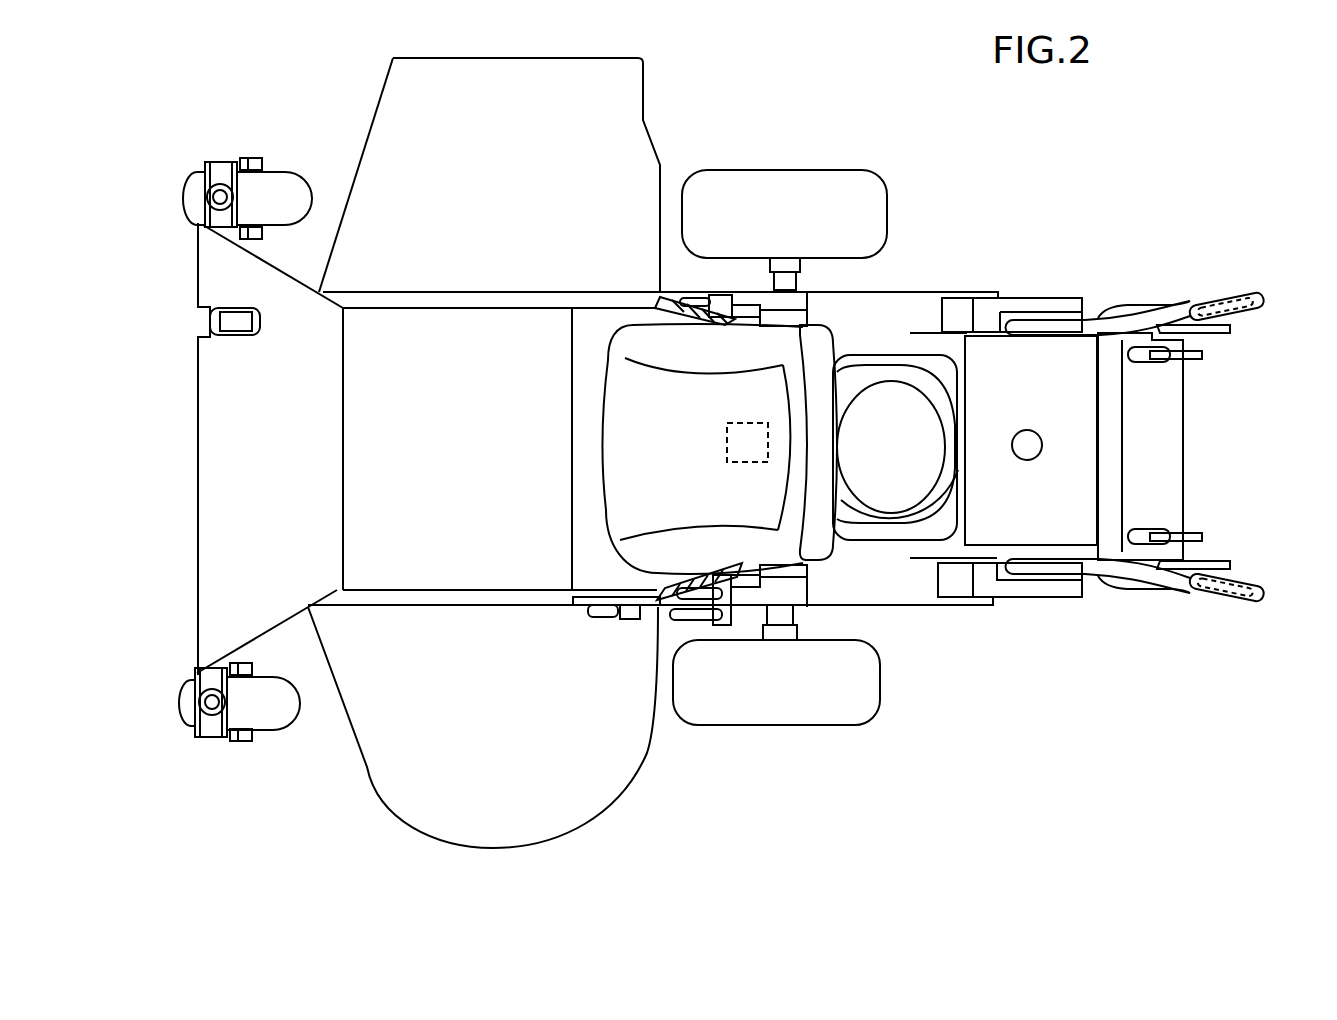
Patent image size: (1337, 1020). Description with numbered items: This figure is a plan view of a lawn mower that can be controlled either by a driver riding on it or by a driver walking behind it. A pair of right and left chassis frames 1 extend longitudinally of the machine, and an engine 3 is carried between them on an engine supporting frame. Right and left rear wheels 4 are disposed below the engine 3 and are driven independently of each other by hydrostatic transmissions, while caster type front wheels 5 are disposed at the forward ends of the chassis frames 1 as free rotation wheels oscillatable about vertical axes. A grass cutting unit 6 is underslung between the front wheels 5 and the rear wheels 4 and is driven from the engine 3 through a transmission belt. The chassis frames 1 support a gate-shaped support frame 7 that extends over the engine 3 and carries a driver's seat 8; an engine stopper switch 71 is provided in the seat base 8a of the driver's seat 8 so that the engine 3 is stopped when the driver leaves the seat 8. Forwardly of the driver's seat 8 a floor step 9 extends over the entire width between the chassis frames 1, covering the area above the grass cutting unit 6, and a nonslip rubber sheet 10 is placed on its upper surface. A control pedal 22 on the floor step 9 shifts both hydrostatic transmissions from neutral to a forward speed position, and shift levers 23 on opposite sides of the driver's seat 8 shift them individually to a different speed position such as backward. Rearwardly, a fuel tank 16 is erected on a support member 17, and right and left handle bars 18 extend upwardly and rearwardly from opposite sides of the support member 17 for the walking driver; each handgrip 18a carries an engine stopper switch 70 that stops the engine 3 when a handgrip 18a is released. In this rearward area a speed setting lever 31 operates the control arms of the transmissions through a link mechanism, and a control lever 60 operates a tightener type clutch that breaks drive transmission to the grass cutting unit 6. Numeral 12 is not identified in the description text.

The chassis frames 1 is at (431, 292).
The engine 3 is at (880, 540).
The rear wheels 4 is at (887, 212).
The front wheels 5 is at (297, 172).
The grass cutting unit 6 is at (650, 755).
The support frame 7 is at (656, 312).
The driver's seat 8 is at (833, 337).
The seat base 8a is at (624, 437).
The floor step 9 is at (583, 563).
The nonslip rubber sheet 10 is at (385, 573).
The caster pivot 12 is at (218, 682).
The fuel tank 16 is at (1055, 540).
The support member 17 is at (1012, 598).
The handle bars 18 is at (1060, 325).
The handgrips 18a is at (1262, 298).
The control pedal 22 is at (242, 323).
The shift levers 23 is at (697, 299).
The speed setting lever 31 is at (1195, 362).
The control lever 60 is at (1195, 538).
The engine stopper switch 70 is at (1248, 320).
The engine stopper switch 71 is at (725, 438).